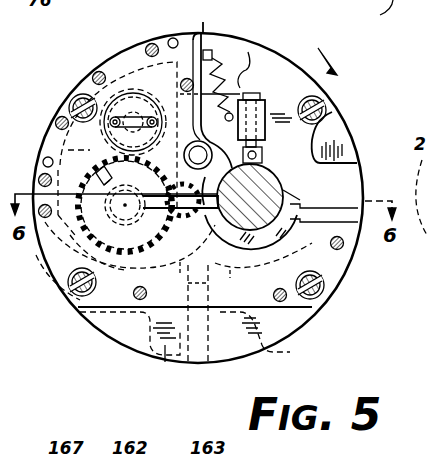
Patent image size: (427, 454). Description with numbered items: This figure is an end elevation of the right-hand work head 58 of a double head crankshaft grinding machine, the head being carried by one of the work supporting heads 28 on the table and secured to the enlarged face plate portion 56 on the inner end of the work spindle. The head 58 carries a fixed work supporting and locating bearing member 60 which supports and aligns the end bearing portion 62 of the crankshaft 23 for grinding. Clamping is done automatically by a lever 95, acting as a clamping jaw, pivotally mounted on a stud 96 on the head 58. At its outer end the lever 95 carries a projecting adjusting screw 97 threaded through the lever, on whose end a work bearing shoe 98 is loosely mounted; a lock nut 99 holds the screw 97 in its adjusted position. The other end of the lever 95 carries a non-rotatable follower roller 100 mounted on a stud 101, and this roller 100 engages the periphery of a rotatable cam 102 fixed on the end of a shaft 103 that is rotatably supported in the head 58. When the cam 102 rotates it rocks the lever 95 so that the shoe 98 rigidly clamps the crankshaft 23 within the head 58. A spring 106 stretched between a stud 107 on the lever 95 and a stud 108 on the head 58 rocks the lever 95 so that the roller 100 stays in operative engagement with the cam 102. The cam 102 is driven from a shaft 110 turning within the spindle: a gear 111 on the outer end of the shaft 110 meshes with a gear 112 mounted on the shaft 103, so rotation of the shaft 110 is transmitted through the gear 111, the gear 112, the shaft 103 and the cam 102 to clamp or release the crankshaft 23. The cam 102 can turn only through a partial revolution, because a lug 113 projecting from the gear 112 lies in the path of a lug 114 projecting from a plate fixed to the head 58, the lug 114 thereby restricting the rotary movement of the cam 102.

The follower roller 100 is at (128, 90).
The stud 101 is at (140, 112).
The stud 108 is at (203, 33).
The spring 106 is at (215, 70).
The adjusting screw 97 is at (248, 88).
The lock nut 99 is at (253, 93).
The lever 95 is at (300, 102).
The stud 107 is at (265, 126).
The work bearing shoe 98 is at (262, 155).
The face plate portion 56 is at (346, 133).
The end bearing portion 62 is at (283, 182).
The crankshaft 23 is at (300, 197).
The bearing member 60 is at (305, 210).
The stud 96 is at (196, 142).
The lug 113 is at (110, 174).
The cam 102 is at (148, 205).
The shaft 103 is at (80, 227).
The gear 112 is at (88, 262).
The lug 114 is at (121, 294).
The shaft 110 is at (173, 279).
The gear 111 is at (243, 286).
The work head 58 is at (165, 350).
The work supporting head 28 is at (393, 17).